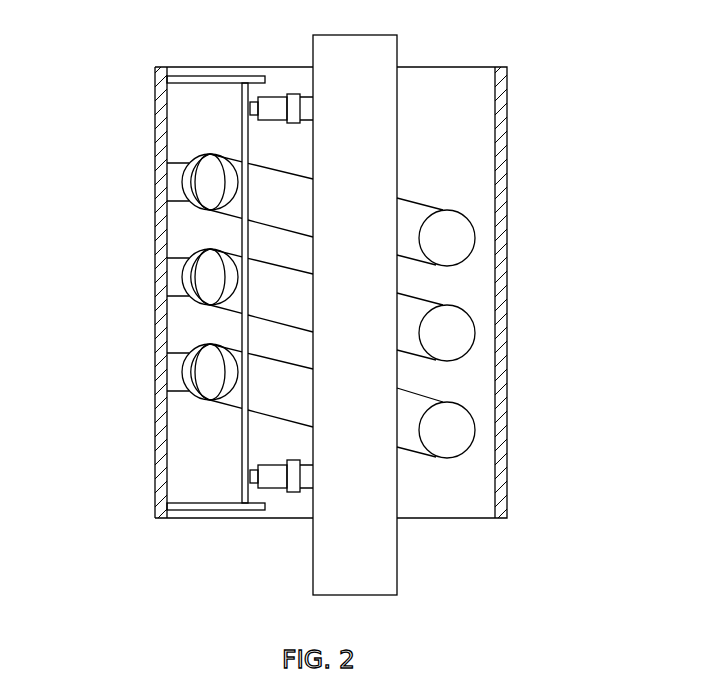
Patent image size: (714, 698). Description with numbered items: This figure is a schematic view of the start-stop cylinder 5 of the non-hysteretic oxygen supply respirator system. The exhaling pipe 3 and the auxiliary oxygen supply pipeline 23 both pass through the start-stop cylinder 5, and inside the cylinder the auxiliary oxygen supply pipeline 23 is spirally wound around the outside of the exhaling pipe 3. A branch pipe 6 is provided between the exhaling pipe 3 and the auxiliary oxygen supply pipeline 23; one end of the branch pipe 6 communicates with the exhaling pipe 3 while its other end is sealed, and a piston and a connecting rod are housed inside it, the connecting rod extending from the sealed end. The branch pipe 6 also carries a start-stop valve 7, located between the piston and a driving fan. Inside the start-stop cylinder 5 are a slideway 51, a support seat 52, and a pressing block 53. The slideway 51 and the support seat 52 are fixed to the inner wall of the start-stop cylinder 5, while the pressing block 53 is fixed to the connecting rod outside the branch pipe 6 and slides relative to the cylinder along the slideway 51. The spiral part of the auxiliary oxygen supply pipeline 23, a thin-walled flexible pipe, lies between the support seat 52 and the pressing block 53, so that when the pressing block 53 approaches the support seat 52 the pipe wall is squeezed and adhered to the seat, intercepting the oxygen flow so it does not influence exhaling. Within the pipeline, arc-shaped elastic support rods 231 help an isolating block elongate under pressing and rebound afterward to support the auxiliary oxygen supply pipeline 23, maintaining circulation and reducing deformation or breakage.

The exhaling pipe 3 is at (375, 152).
The start-stop cylinder 5 is at (498, 342).
The slideway 51 is at (175, 80).
The support seat 52 is at (138, 277).
The pressing block 53 is at (247, 143).
The elastic support rod 231 is at (195, 283).
The auxiliary oxygen supply pipeline 23 is at (460, 235).
The branch pipe 6 is at (278, 473).
The start-stop valve 7 is at (293, 460).